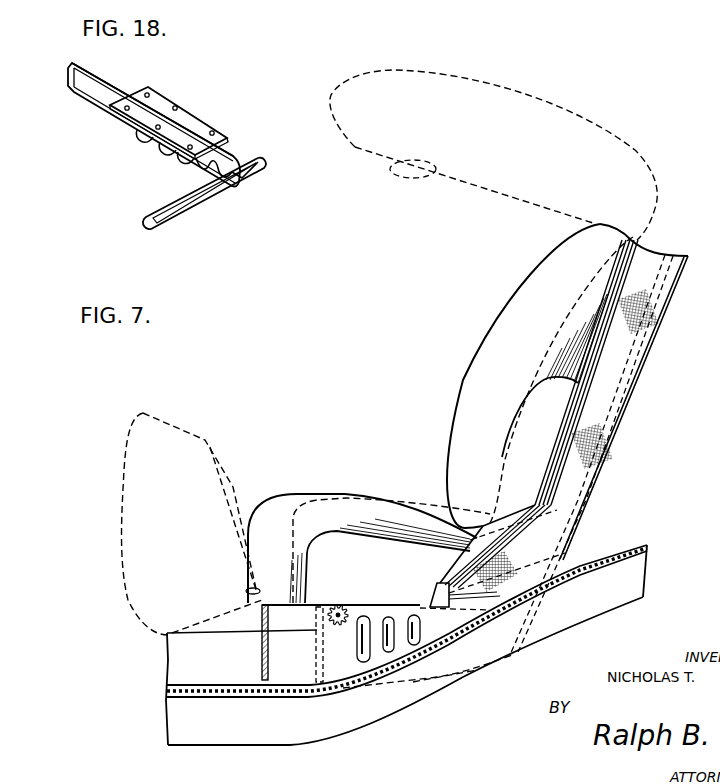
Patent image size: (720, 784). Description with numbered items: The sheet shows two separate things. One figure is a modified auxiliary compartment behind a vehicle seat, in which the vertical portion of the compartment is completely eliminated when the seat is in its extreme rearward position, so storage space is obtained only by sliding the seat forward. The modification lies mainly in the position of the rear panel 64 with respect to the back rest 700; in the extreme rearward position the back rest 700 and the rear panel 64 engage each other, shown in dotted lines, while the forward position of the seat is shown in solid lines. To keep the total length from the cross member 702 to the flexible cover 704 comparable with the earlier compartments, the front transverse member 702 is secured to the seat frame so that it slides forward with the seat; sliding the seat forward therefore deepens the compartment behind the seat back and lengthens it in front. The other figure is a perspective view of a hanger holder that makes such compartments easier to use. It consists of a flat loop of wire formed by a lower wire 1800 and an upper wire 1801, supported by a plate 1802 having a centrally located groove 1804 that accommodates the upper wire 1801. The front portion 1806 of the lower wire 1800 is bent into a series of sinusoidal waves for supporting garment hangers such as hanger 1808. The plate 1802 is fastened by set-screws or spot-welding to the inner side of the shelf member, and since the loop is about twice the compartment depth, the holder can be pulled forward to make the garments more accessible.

In FIG. 18, the lower wire 1800 is at (95, 104).
In FIG. 18, the upper wire 1801 is at (95, 71).
In FIG. 18, the plate 1802 is at (185, 118).
In FIG. 18, the groove 1804 is at (131, 94).
In FIG. 18, the sinusoidal front portion 1806 is at (168, 148).
In FIG. 18, the garment hanger 1808 is at (150, 207).
In FIG. 7, the back rest 700 is at (563, 248).
In FIG. 7, the flexible cover 704 is at (665, 252).
In FIG. 7, the rear panel 64 is at (618, 433).
In FIG. 7, the cross member 702 is at (263, 652).